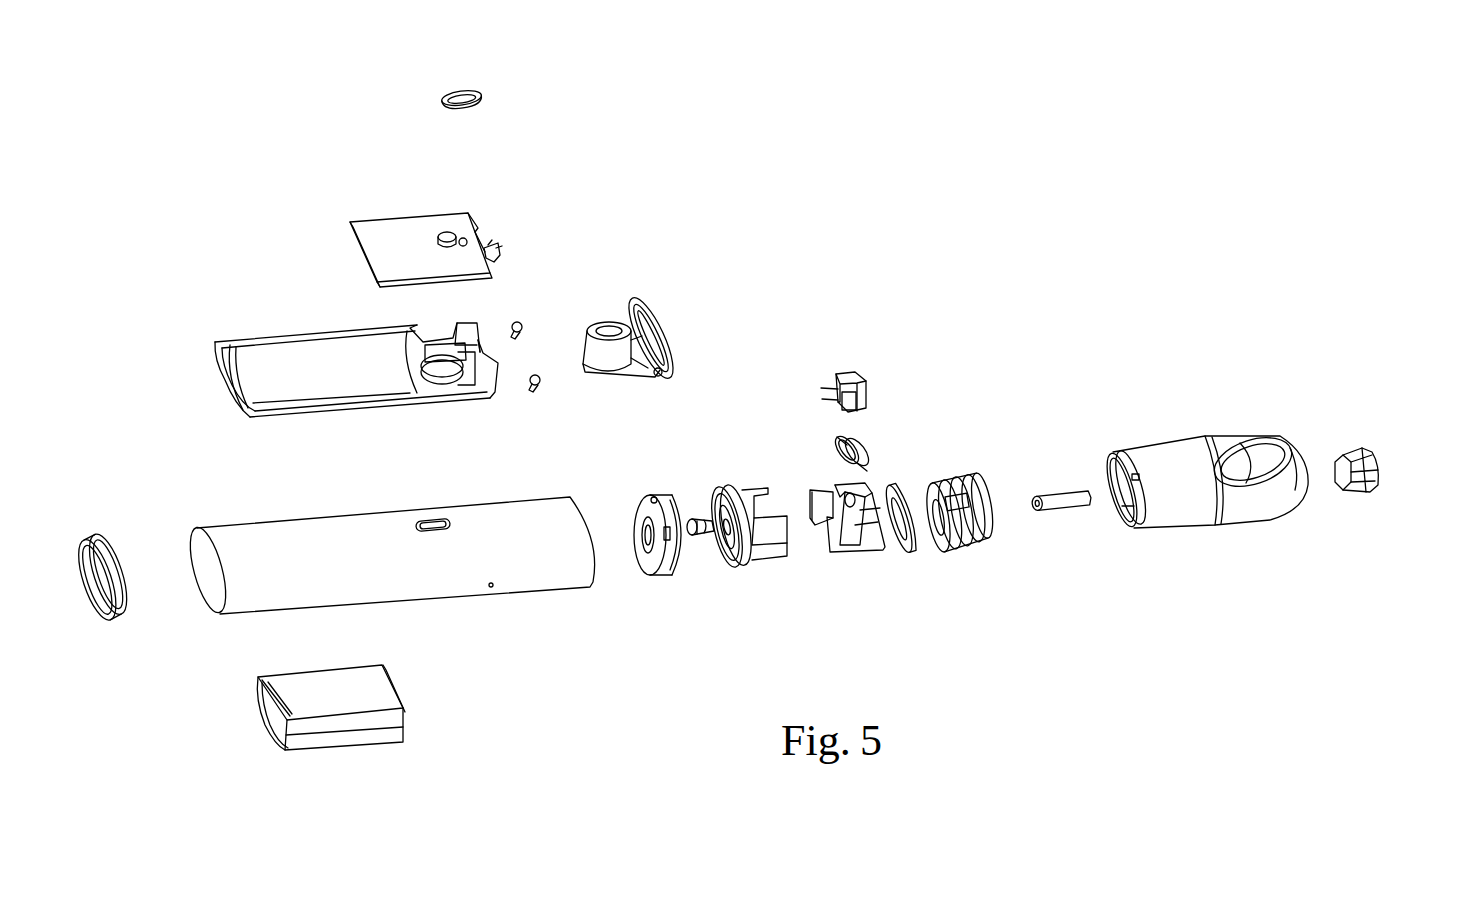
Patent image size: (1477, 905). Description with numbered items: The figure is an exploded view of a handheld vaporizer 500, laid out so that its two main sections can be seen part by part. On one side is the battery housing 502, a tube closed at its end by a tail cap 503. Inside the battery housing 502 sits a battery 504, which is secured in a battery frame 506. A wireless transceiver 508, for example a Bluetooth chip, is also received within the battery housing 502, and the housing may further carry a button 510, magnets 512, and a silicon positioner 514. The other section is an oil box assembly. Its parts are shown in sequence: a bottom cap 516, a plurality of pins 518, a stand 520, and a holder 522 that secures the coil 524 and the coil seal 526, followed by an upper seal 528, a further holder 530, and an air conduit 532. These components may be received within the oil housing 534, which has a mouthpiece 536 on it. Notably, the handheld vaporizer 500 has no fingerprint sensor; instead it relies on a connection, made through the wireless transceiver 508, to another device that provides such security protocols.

The handheld vaporizer 500 is at (651, 147).
The battery housing 502 is at (468, 603).
The tail cap 503 is at (100, 533).
The battery 504 is at (415, 726).
The battery frame 506 is at (335, 325).
The wireless transceiver 508 is at (420, 213).
The button 510 is at (443, 109).
The magnets 512 is at (517, 343).
The silicon positioner 514 is at (648, 315).
The bottom cap 516 is at (647, 492).
The pins 518 is at (713, 538).
The stand 520 is at (738, 575).
The holder 522 is at (832, 550).
The coil 524 is at (863, 380).
The coil seal 526 is at (862, 448).
The upper seal 528 is at (910, 550).
The holder 530 is at (978, 548).
The air conduit 532 is at (1053, 513).
The oil housing 534 is at (1252, 535).
The mouthpiece 536 is at (1367, 493).